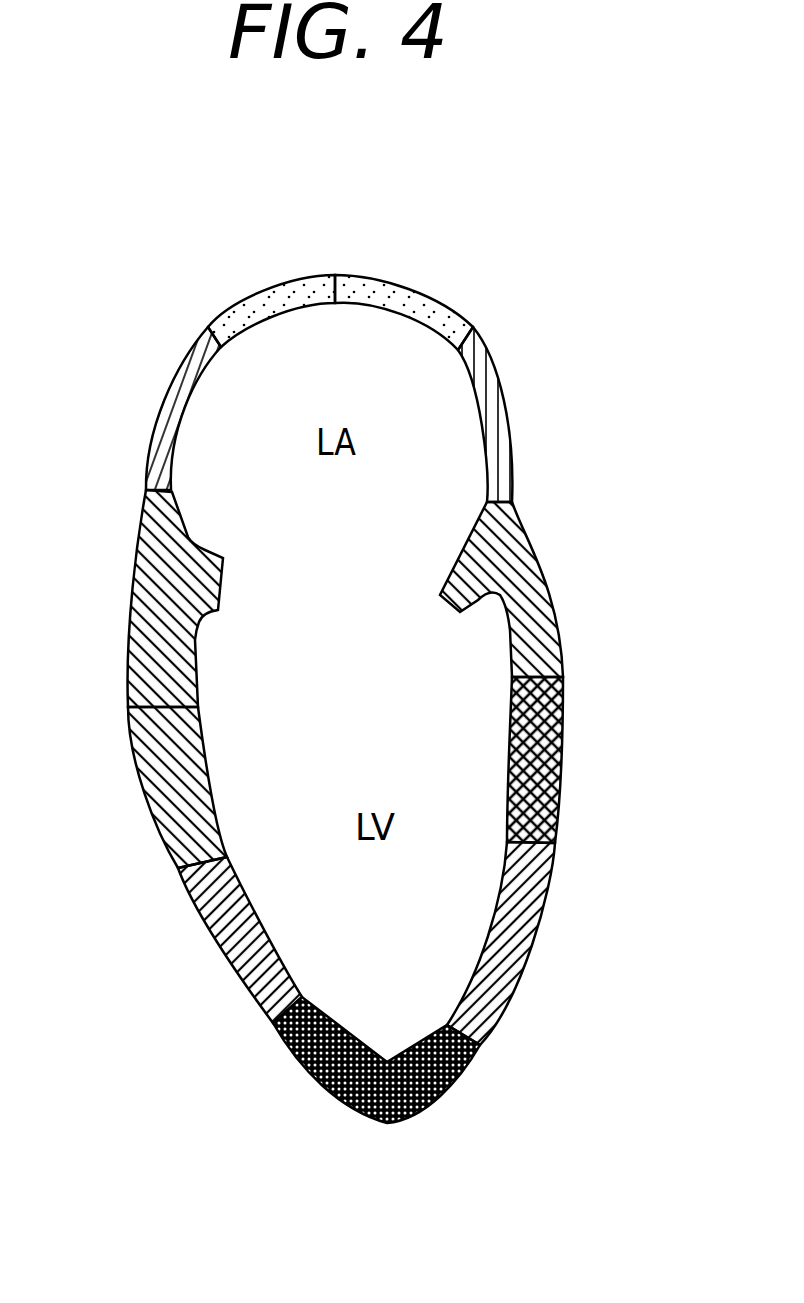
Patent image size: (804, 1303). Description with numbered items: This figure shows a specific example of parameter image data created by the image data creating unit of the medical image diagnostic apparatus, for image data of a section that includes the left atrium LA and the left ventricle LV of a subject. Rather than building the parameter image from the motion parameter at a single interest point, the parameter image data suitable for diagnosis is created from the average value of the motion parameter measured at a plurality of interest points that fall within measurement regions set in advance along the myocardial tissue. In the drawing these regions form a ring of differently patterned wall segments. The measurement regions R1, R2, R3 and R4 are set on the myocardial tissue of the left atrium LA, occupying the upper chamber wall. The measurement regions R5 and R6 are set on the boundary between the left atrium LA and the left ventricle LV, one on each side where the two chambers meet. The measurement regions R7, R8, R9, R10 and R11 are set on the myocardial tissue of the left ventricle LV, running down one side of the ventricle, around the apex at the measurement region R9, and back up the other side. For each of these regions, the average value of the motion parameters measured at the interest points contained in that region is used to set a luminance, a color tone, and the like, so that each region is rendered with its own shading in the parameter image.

The measurement region R1 is at (170, 393).
The measurement region R2 is at (266, 297).
The measurement region R3 is at (445, 309).
The measurement region R4 is at (515, 416).
The measurement region R5 is at (142, 582).
The measurement region R6 is at (547, 597).
The measurement region R7 is at (152, 810).
The measurement region R8 is at (225, 967).
The measurement region R9 is at (426, 1112).
The measurement region R10 is at (527, 977).
The measurement region R11 is at (562, 782).